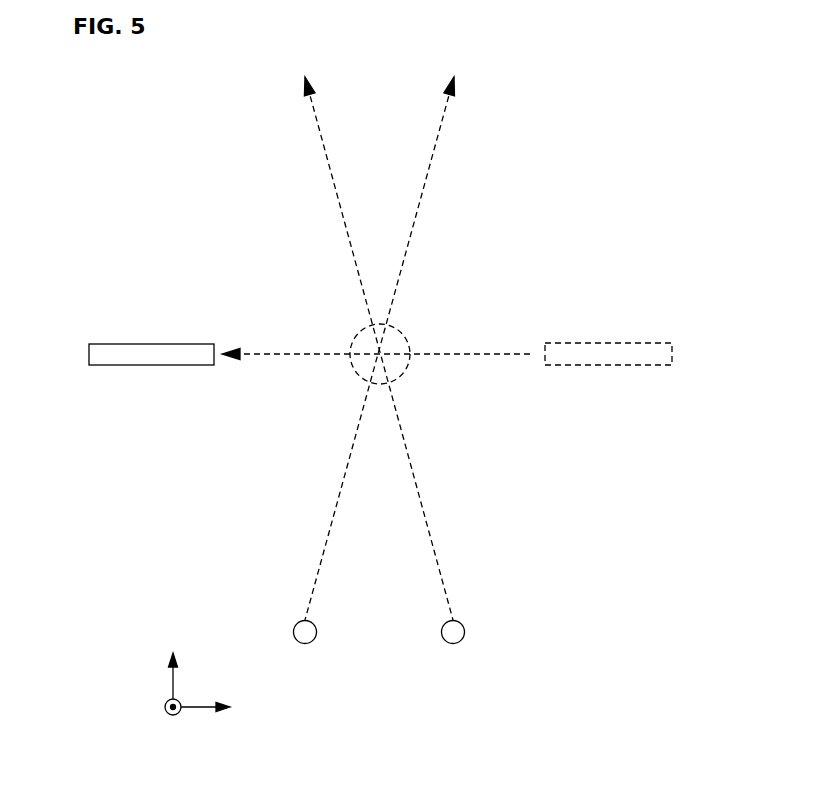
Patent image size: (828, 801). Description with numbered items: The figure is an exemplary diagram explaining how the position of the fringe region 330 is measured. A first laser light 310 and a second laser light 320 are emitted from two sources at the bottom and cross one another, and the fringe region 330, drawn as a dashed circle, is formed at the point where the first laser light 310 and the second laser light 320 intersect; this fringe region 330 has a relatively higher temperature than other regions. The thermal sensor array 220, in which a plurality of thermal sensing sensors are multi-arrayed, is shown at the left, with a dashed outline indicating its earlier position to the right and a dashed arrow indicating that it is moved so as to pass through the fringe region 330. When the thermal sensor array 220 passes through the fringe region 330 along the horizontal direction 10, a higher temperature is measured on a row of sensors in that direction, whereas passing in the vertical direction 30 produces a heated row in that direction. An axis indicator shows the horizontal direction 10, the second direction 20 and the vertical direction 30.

The horizontal direction 10 is at (220, 706).
The second direction 20 is at (173, 659).
The vertical direction 30 is at (173, 722).
The thermal sensor array 220 is at (153, 343).
The first laser light 310 is at (325, 548).
The second laser light 320 is at (432, 548).
The fringe region 330 is at (405, 337).